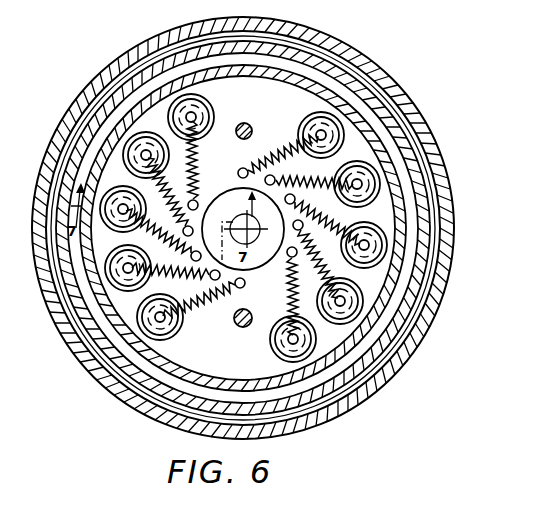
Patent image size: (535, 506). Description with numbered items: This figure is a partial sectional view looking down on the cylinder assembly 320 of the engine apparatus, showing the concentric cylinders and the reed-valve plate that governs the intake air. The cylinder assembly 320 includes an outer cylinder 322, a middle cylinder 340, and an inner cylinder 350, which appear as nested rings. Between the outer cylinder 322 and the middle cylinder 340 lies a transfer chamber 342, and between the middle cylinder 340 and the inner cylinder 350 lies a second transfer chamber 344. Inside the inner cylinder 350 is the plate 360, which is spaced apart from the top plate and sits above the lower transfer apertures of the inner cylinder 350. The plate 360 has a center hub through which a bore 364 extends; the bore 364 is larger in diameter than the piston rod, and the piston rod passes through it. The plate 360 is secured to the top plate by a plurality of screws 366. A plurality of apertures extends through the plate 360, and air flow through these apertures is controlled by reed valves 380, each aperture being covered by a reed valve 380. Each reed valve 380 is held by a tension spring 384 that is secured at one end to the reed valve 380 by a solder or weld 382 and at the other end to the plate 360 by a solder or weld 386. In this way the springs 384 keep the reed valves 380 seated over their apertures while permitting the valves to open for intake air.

The cylinder assembly 320 is at (458, 172).
The outer cylinder 322 is at (418, 348).
The middle cylinder 340 is at (416, 285).
The transfer chamber 342 is at (418, 318).
The transfer chamber 344 is at (417, 247).
The inner cylinder 350 is at (408, 211).
The plate 360 is at (153, 120).
The bore 364 is at (223, 196).
The screws 366 is at (248, 124).
The reed valve 380 is at (268, 333).
The solder or weld 382 is at (194, 113).
The tension spring 384 is at (259, 156).
The solder or weld 386 is at (207, 307).